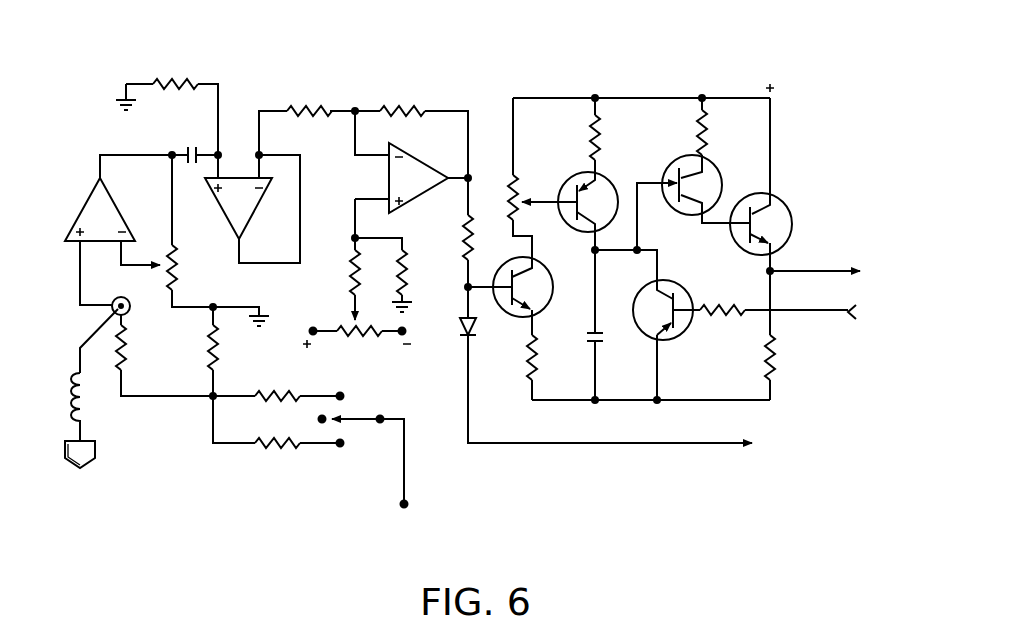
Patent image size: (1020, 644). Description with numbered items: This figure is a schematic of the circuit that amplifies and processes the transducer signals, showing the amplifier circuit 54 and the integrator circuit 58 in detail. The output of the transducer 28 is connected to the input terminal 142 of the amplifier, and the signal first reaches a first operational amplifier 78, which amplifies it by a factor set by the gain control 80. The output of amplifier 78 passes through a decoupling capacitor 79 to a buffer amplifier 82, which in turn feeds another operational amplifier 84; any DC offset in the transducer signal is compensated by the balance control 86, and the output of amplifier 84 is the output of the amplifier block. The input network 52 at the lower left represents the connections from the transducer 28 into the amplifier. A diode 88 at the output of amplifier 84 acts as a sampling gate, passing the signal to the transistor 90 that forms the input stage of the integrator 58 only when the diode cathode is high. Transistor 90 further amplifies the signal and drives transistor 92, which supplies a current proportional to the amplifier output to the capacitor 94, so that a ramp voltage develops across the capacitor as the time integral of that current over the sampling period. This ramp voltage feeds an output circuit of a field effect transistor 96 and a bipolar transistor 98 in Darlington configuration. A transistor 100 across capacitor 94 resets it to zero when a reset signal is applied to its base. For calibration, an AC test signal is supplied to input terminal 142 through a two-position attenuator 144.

The transducer 28 is at (72, 453).
The input network 52 is at (187, 426).
The amplifier circuit 54 is at (598, 237).
The integrator circuit 58 is at (702, 211).
The first operational amplifier 78 is at (95, 209).
The decoupling capacitor 79 is at (193, 146).
The gain control 80 is at (178, 270).
The buffer amplifier 82 is at (250, 201).
The operational amplifier 84 is at (413, 166).
The balance control 86 is at (352, 337).
The diode 88 is at (462, 329).
The transistor 90 is at (540, 268).
The transistor 92 is at (607, 237).
The capacitor 94 is at (603, 339).
The field effect transistor 96 is at (708, 172).
The bipolar transistor 98 is at (782, 210).
The transistor 100 is at (673, 336).
The input terminal 142 is at (113, 305).
The two-position attenuator 144 is at (361, 421).